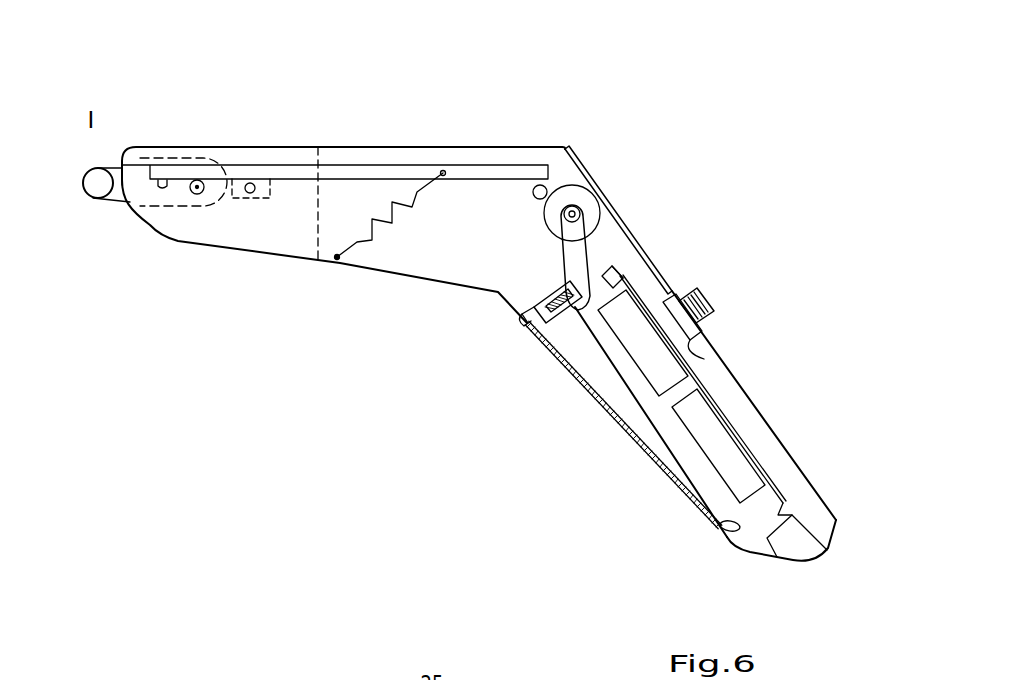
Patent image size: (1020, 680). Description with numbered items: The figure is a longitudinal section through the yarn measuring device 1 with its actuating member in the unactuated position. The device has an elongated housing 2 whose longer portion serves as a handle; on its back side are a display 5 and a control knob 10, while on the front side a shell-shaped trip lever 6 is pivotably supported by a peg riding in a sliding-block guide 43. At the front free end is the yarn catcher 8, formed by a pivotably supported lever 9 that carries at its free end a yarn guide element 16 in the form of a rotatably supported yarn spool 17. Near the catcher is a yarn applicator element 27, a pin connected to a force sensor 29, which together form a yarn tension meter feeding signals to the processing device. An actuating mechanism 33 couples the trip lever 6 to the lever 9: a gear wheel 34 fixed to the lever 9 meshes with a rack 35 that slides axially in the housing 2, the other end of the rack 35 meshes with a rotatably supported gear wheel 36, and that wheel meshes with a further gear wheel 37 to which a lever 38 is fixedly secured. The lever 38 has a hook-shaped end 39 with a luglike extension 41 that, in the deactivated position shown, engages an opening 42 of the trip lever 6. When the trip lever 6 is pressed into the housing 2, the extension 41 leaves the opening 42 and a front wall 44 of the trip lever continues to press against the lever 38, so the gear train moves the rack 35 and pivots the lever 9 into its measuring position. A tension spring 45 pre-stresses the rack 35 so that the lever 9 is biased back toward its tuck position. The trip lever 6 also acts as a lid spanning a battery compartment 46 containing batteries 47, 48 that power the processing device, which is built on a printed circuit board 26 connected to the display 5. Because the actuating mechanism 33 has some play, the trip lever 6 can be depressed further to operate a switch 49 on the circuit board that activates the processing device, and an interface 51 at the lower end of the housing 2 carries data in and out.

The yarn measuring device 1 is at (649, 109).
The housing 2 is at (721, 357).
The display 5 is at (620, 218).
The trip lever 6 is at (642, 422).
The yarn catcher 8 is at (79, 206).
The lever 9 is at (118, 197).
The control knob 10 is at (718, 292).
The yarn guide element 16 is at (102, 155).
The yarn spool 17 is at (95, 197).
The printed circuit board 26 is at (783, 489).
The yarn applicator element 27 is at (250, 194).
The force sensor 29 is at (268, 192).
The actuating mechanism 33 is at (471, 254).
The gear wheel 34 is at (197, 194).
The rack 35 is at (268, 170).
The gear wheel 36 is at (534, 195).
The gear wheel 37 is at (550, 230).
The lever 38 is at (568, 263).
The hook-shaped end 39 is at (560, 305).
The luglike extension 41 is at (604, 280).
The opening 42 is at (528, 330).
The sliding-block guide 43 is at (718, 532).
The front wall 44 is at (530, 318).
The tension spring 45 is at (390, 215).
The battery compartment 46 is at (640, 445).
The battery 47 is at (626, 354).
The battery 48 is at (701, 447).
The switch 49 is at (618, 270).
The interface 51 is at (797, 548).